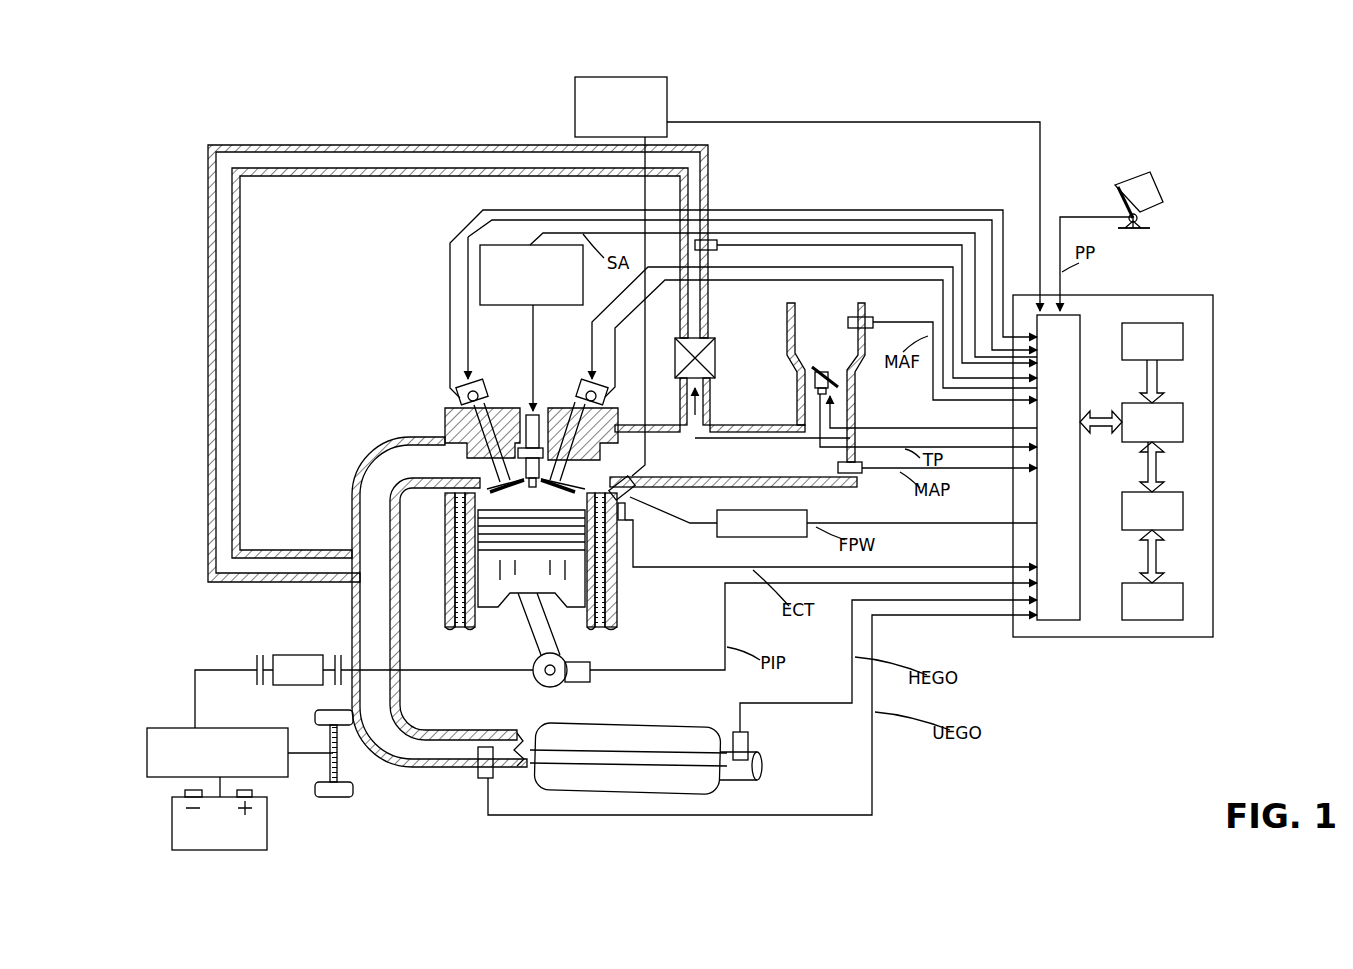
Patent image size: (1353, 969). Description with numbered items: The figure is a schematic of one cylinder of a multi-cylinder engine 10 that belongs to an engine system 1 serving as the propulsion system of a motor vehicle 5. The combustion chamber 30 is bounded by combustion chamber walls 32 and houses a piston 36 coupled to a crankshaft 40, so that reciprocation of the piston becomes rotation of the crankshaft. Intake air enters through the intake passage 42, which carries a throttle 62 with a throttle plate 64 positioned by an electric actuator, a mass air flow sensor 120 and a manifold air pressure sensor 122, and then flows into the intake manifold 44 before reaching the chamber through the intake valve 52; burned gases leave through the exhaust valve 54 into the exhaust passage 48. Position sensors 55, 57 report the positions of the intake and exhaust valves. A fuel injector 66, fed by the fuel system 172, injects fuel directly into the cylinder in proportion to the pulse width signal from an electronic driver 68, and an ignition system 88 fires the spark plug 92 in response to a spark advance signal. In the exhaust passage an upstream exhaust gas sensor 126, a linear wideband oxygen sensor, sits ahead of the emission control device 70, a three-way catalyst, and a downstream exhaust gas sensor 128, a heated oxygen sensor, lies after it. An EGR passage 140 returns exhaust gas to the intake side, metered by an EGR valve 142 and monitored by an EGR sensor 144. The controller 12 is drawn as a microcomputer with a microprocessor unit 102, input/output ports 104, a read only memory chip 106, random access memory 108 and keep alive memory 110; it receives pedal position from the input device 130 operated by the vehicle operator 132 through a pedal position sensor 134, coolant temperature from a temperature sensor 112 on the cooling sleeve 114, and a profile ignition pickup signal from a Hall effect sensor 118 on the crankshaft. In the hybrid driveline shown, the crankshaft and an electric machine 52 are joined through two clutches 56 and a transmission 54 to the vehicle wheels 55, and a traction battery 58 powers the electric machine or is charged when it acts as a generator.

The engine system 1 is at (1054, 695).
The motor vehicle 5 is at (1277, 124).
The engine 10 is at (383, 364).
The controller 12 is at (1213, 297).
The combustion chamber 30 is at (532, 495).
The combustion chamber walls 32 is at (480, 612).
The piston 36 is at (517, 580).
The crankshaft 40 is at (542, 688).
The intake passage 42 is at (812, 347).
The intake manifold 44 is at (757, 467).
The exhaust passage 48 is at (403, 472).
The intake valve 52 is at (590, 470).
The exhaust valve 54 is at (493, 467).
The position sensor 55 is at (601, 399).
The clutch 56 is at (256, 657).
The position sensor 57 is at (458, 392).
The traction battery 58 is at (268, 828).
The throttle 62 is at (842, 380).
The throttle plate 64 is at (810, 372).
The fuel injector 66 is at (632, 498).
The electronic driver 68 is at (736, 538).
The emission control device 70 is at (683, 727).
The ignition system 88 is at (492, 246).
The spark plug 92 is at (537, 408).
The microprocessor unit 102 is at (1183, 425).
The input/output ports 104 is at (1083, 323).
The read only memory chip 106 is at (1183, 338).
The random access memory 108 is at (1183, 515).
The keep alive memory 110 is at (1183, 603).
The temperature sensor 112 is at (627, 519).
The cooling sleeve 114 is at (603, 582).
The Hall effect sensor 118 is at (580, 684).
The mass air flow sensor 120 is at (868, 316).
The manifold air pressure sensor 122 is at (858, 475).
The upstream exhaust gas sensor 126 is at (484, 780).
The downstream exhaust gas sensor 128 is at (748, 738).
The input device 130 is at (1116, 195).
The vehicle operator 132 is at (1162, 185).
The pedal position sensor 134 is at (1150, 225).
The EGR passage 140 is at (457, 144).
The EGR valve 142 is at (716, 352).
The EGR sensor 144 is at (712, 252).
The fuel system 172 is at (668, 110).